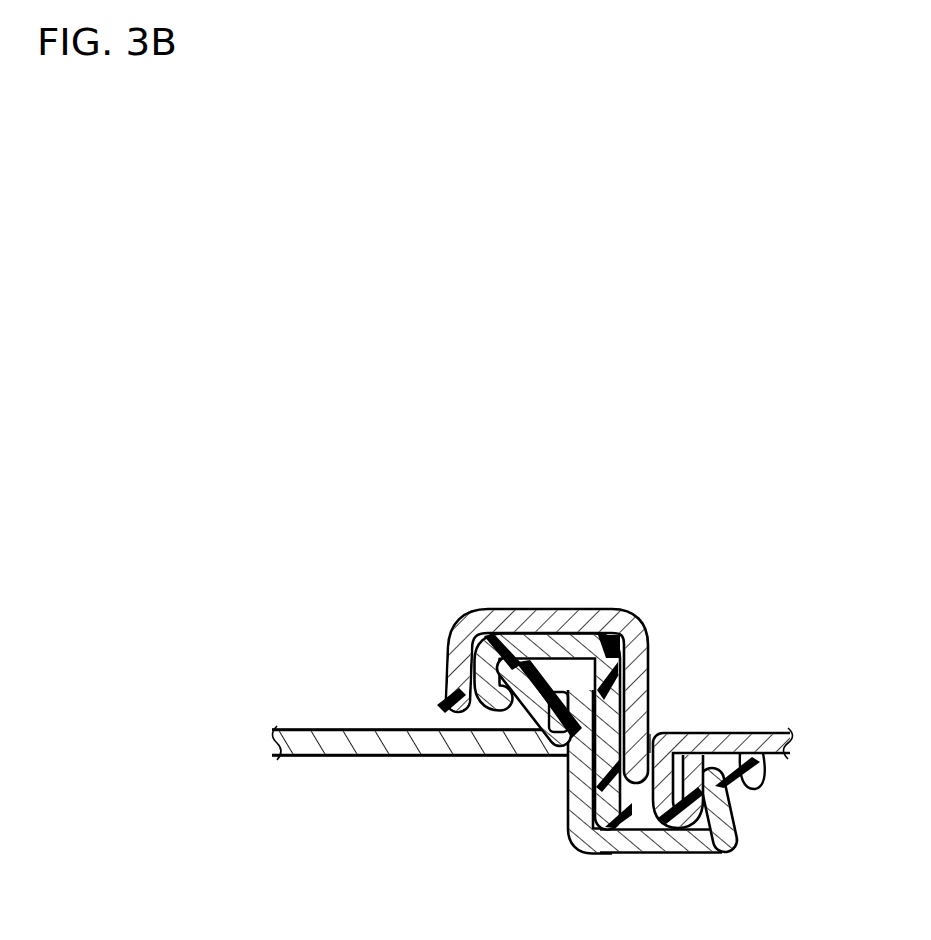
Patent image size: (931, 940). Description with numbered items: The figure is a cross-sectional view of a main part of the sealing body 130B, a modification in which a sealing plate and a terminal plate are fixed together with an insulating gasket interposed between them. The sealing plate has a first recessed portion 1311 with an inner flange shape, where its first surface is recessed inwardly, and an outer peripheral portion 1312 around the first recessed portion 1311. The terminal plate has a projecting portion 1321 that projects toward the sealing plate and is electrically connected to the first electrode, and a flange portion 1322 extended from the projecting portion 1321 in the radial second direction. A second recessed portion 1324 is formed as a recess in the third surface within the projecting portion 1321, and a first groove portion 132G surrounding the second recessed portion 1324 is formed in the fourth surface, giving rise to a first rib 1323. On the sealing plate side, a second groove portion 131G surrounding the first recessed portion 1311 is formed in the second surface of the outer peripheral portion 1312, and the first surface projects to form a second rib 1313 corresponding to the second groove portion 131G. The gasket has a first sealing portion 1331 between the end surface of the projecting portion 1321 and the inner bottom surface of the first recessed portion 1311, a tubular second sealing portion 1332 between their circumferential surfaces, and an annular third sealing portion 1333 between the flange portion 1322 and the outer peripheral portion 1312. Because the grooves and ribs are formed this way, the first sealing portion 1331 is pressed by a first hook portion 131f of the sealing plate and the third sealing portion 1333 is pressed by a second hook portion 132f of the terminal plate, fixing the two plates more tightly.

The sealing body 130B is at (784, 469).
The first recessed portion 1311 is at (622, 852).
The outer peripheral portion 1312 is at (337, 757).
The second rib 1313 is at (568, 650).
The first hook portion 131f is at (728, 790).
The second groove portion 131G is at (543, 753).
The projecting portion 1321 is at (761, 707).
The second recessed portion 1324 is at (733, 732).
The flange portion 1322 is at (525, 612).
The first rib 1323 is at (578, 852).
The second hook portion 132f is at (472, 673).
The first groove portion 132G is at (655, 728).
The first sealing portion 1331 is at (692, 848).
The second sealing portion 1332 is at (640, 672).
The third sealing portion 1333 is at (590, 635).